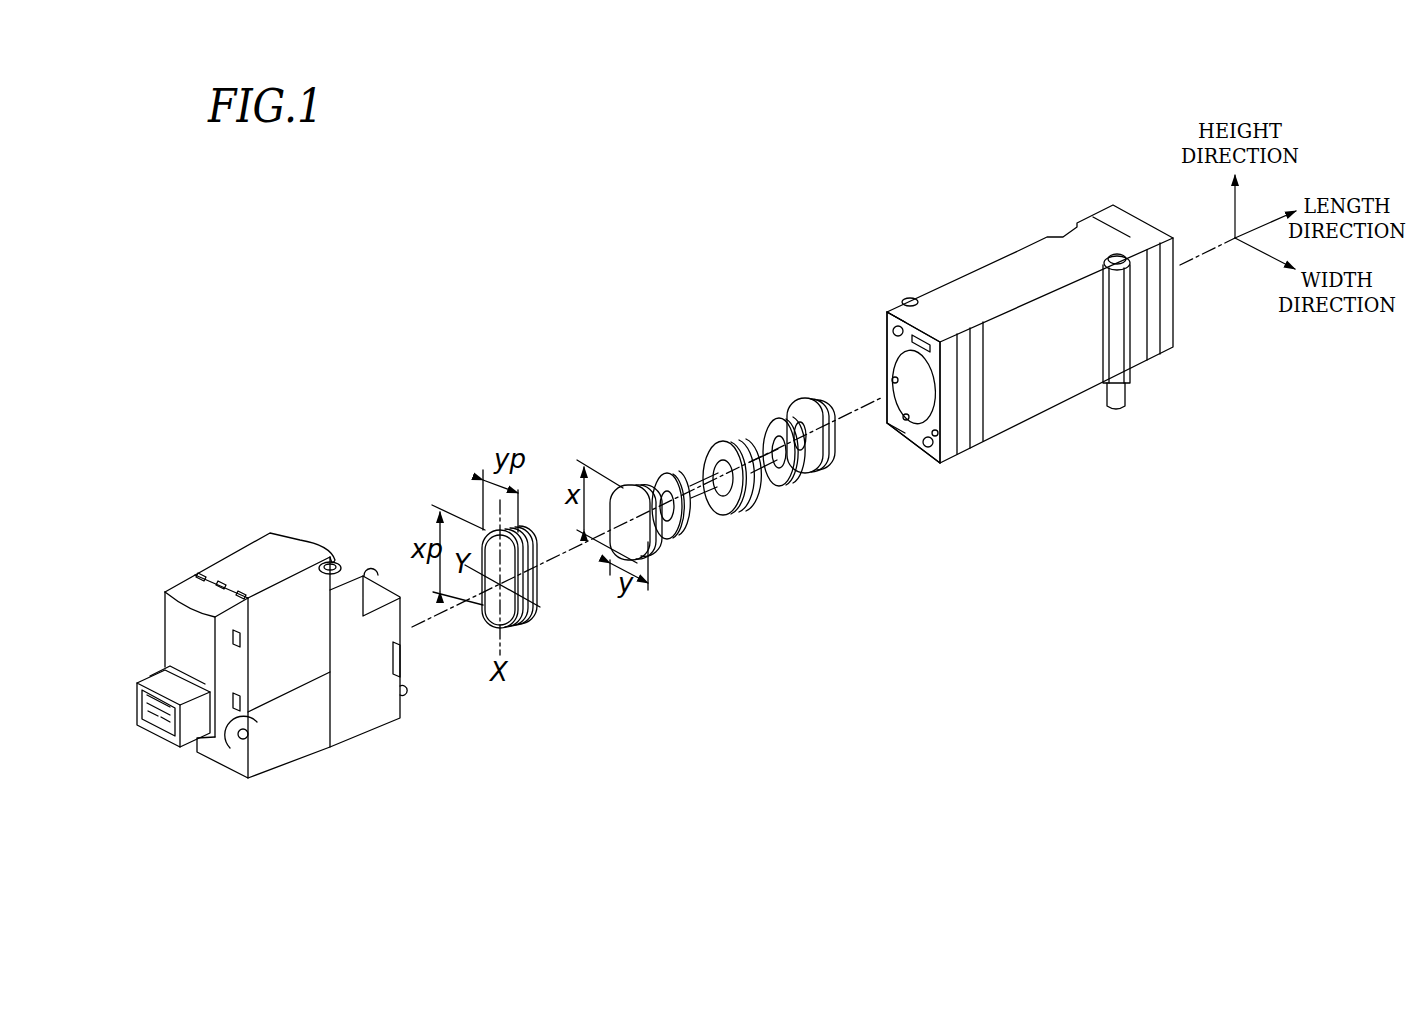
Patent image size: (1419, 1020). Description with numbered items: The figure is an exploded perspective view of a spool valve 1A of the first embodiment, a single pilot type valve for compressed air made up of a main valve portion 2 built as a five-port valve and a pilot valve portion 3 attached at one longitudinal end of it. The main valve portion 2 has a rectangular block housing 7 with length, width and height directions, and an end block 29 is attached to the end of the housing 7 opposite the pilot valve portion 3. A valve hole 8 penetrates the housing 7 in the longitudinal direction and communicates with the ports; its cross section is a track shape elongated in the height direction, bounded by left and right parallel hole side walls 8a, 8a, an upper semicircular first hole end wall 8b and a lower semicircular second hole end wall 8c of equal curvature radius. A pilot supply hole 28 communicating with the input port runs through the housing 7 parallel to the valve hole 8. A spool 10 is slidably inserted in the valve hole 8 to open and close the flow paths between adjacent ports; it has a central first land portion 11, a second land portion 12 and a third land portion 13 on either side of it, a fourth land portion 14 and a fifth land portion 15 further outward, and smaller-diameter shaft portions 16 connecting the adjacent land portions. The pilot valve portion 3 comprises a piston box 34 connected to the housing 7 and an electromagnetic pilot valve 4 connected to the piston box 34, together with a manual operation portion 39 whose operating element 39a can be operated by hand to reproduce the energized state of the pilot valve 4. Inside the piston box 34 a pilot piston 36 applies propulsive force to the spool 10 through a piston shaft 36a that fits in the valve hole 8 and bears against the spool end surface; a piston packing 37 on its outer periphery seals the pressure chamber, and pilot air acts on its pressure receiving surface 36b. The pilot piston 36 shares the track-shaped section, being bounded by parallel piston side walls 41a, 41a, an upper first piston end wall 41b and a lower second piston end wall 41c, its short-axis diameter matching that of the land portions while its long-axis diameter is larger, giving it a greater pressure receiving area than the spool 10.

The spool valve 1A is at (684, 146).
The main valve portion 2 is at (1030, 299).
The pilot valve portion 3 is at (300, 468).
The pilot valve 4 is at (245, 560).
The housing 7 is at (970, 252).
The valve hole 8 is at (901, 368).
The hole side wall 8a is at (905, 392).
The first hole end wall 8b is at (893, 350).
The second hole end wall 8c is at (908, 420).
The spool 10 is at (708, 418).
The first land portion 11 is at (716, 500).
The second land portion 12 is at (668, 525).
The third land portion 13 is at (780, 475).
The fourth land portion 14 is at (630, 503).
The fifth land portion 15 is at (802, 418).
The shaft portion 16 is at (692, 488).
The pilot supply hole 28 is at (921, 337).
The end block 29 is at (1110, 213).
The piston box 34 is at (350, 705).
The pilot piston 36 is at (512, 584).
The piston shaft 36a is at (547, 577).
The pressure receiving surface 36b is at (493, 603).
The piston packing 37 is at (522, 630).
The manual operation portion 39 is at (328, 558).
The operating element 39a is at (328, 568).
The piston side wall 41a is at (485, 553).
The first piston end wall 41b is at (517, 537).
The second piston end wall 41c is at (495, 623).